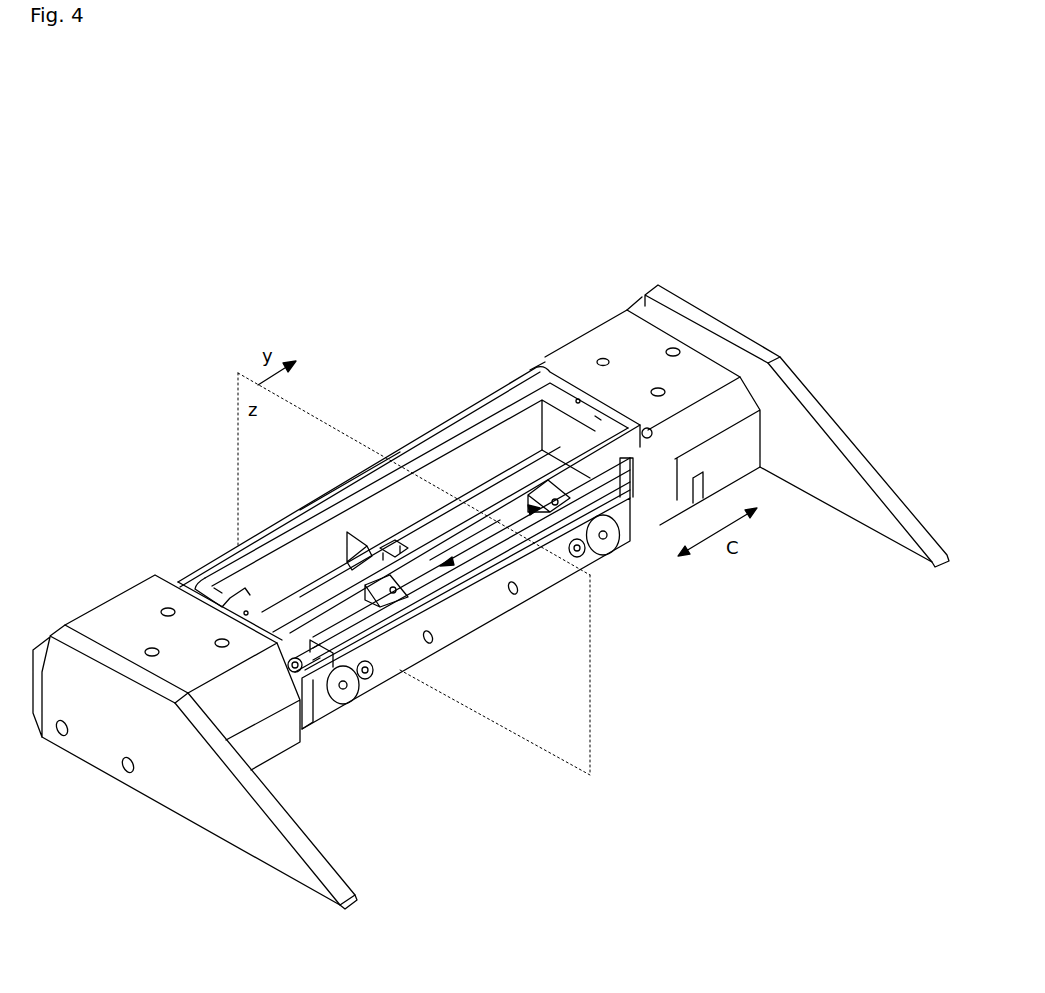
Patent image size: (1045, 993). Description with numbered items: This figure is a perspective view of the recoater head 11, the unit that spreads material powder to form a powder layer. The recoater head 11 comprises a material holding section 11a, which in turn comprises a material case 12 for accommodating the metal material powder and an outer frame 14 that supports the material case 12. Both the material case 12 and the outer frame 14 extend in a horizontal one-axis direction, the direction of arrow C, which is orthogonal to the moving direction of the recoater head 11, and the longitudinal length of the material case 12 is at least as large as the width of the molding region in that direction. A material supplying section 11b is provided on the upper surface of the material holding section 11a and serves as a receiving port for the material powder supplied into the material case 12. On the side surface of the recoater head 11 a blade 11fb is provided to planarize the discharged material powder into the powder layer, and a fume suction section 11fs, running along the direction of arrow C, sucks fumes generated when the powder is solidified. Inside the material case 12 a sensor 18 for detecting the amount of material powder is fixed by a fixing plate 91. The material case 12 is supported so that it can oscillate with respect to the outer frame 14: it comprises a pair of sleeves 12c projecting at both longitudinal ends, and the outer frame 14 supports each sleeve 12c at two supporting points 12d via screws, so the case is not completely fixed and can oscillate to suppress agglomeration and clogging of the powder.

The recoater head 11 is at (651, 215).
The material holding section 11a is at (393, 436).
The material supplying section 11b is at (468, 459).
The fume suction section 11fs is at (370, 635).
The blade 11fb is at (633, 550).
The material case 12 is at (512, 417).
The sleeve 12c is at (218, 590).
The supporting point 12d is at (246, 611).
The outer frame 14 is at (540, 382).
The sensor 18 is at (377, 542).
The fixing plate 91 is at (352, 538).